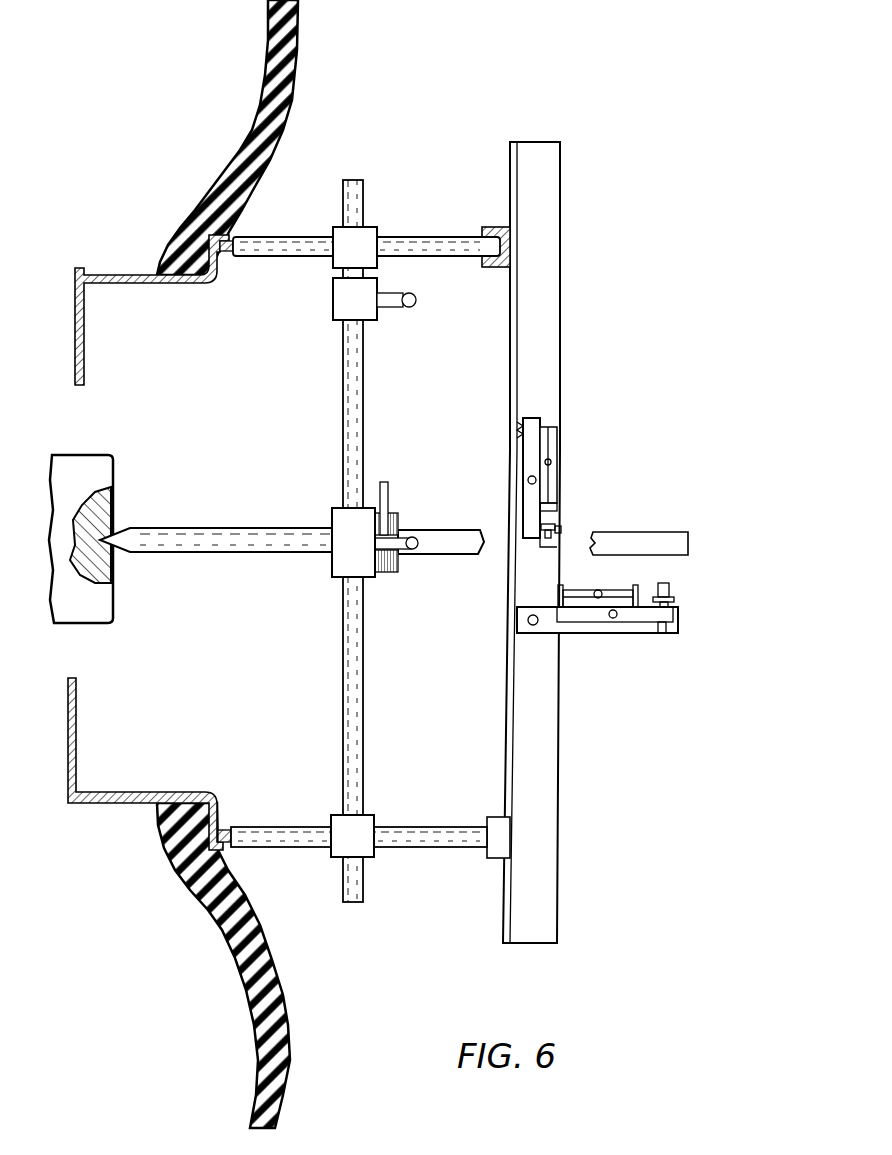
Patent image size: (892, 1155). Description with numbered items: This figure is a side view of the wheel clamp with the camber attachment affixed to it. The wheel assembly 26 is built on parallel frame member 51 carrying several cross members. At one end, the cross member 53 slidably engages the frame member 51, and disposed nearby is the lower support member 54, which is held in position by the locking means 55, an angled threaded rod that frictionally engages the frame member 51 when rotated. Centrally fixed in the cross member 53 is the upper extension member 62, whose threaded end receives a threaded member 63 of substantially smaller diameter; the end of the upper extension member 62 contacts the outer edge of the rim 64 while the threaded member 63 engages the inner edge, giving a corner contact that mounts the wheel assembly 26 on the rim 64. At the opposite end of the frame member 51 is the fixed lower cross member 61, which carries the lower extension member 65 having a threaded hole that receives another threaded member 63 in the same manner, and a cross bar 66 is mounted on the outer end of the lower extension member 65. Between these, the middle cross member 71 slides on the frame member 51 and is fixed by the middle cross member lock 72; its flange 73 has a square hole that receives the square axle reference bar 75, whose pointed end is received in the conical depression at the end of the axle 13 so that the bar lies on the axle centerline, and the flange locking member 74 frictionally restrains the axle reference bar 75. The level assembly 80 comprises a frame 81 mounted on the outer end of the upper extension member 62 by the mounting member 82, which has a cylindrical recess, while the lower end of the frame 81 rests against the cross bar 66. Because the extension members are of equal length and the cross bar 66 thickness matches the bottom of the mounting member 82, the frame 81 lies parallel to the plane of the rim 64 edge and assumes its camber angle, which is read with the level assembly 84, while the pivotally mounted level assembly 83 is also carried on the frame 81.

The axle 13 is at (102, 478).
The wheel assembly 26 is at (305, 482).
The frame member 51 is at (363, 704).
The cross member 53 is at (368, 238).
The lower support member 54 is at (337, 298).
The locking means 55 is at (410, 305).
The lower cross member 61 is at (362, 848).
The upper extension member 62 is at (263, 240).
The threaded member 63 is at (226, 255).
The rim 64 is at (122, 272).
The lower extension member 65 is at (280, 837).
The cross bar 66 is at (497, 855).
The middle cross member 71 is at (340, 555).
The middle cross member lock 72 is at (413, 550).
The flange 73 is at (400, 522).
The flange locking member 74 is at (389, 485).
The axle reference bar 75 is at (255, 553).
The level assembly 80 is at (618, 542).
The frame 81 is at (540, 290).
The mounting member 82 is at (493, 227).
The level assembly 83 is at (565, 447).
The level assembly 84 is at (680, 588).